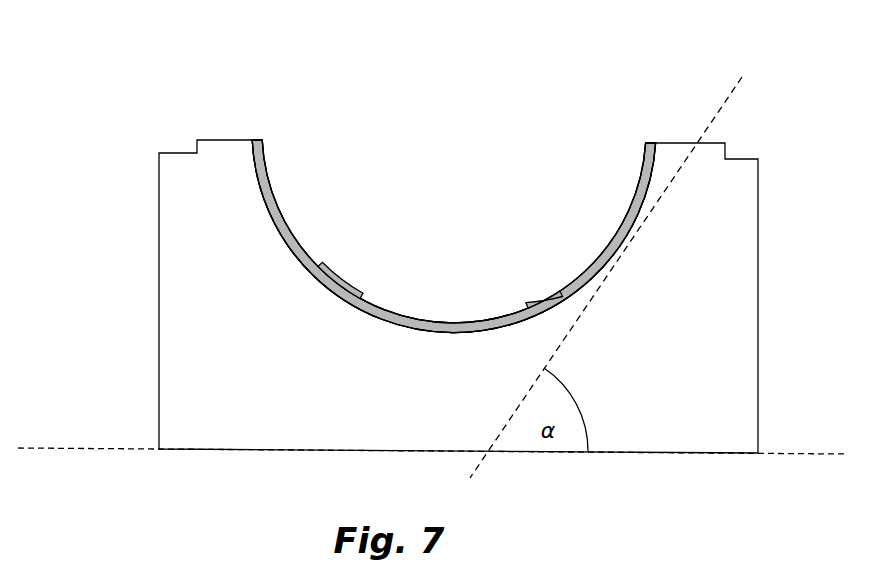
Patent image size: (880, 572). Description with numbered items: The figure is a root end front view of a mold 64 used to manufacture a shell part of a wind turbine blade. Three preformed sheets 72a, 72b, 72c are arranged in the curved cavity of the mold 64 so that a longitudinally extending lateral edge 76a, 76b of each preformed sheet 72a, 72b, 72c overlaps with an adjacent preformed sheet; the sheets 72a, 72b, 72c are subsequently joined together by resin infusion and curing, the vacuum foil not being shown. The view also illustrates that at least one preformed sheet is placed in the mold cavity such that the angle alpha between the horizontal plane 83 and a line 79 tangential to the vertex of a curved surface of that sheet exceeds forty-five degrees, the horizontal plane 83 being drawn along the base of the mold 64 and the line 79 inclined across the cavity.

The mold 64 is at (180, 310).
The preformed sheet 72a is at (255, 148).
The preformed sheet 72b is at (435, 327).
The preformed sheet 72c is at (650, 160).
The longitudinally extending lateral edge 76a is at (358, 299).
The longitudinally extending lateral edge 76b is at (332, 294).
The line 79 is at (727, 102).
The horizontal plane 83 is at (791, 453).